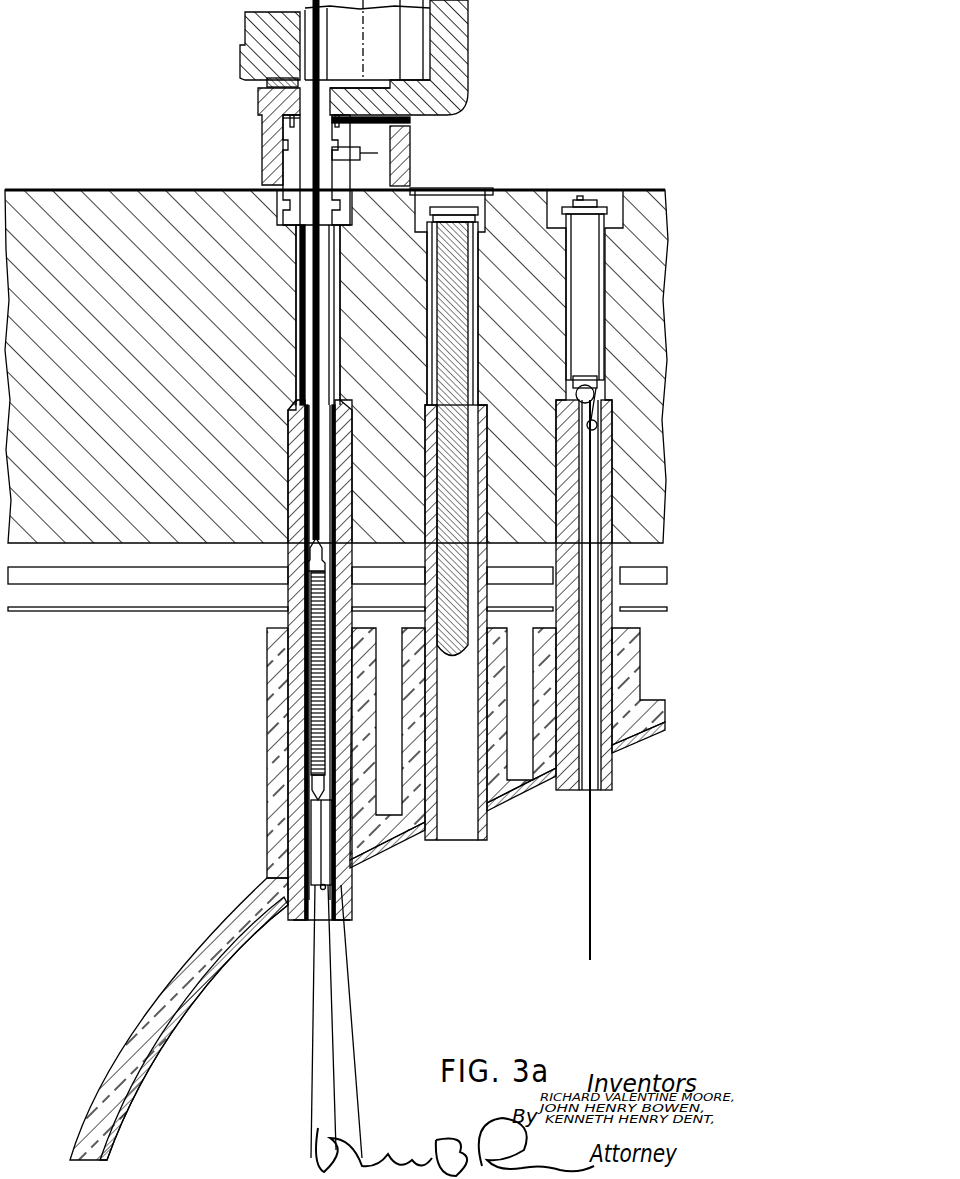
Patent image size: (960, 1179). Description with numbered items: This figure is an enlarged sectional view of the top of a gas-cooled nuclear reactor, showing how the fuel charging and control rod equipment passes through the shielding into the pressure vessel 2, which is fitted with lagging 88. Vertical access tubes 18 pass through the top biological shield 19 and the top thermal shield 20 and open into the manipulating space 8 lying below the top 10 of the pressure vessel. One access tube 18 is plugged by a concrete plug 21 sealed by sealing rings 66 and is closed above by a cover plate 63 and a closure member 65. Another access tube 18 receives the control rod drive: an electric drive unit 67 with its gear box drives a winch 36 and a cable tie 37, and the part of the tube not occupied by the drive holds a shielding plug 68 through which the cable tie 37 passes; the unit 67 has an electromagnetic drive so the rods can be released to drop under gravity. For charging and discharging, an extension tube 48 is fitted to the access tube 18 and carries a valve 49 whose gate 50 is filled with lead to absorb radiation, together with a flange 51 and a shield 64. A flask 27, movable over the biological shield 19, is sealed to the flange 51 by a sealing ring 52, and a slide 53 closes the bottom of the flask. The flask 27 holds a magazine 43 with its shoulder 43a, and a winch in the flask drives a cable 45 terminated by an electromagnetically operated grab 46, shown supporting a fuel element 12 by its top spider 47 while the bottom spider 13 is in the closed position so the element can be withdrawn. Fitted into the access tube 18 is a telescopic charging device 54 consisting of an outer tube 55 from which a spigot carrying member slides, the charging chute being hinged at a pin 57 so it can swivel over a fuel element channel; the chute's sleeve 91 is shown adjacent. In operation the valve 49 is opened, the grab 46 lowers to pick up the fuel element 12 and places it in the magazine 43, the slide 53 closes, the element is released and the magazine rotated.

The pressure vessel 2 is at (249, 942).
The manipulating space 8 is at (453, 802).
The top of the pressure vessel 10 is at (622, 740).
The fuel element 12 is at (302, 630).
The expandable spider 13 is at (312, 786).
The access tube 18 is at (340, 300).
The top biological shield 19 is at (130, 191).
The top thermal shield 20 is at (166, 582).
The concrete plug 21 is at (474, 266).
The flask 27 is at (458, 48).
The winch 36 is at (595, 393).
The cable tie 37 is at (592, 868).
The magazine 43 is at (404, 27).
The bore shoulder 43a is at (432, 110).
The cable 45 is at (312, 355).
The electromagnetically operated grab 46 is at (310, 545).
The top spider 47 is at (334, 532).
The extension tube 48 is at (283, 205).
The valve 49 is at (350, 210).
The gate 50 is at (362, 153).
The flange 51 is at (262, 160).
The sealing ring 52 is at (410, 120).
The slide 53 is at (267, 83).
The charging device 54 is at (318, 830).
The outer tube 55 is at (314, 856).
The pin 57 is at (341, 886).
The cover plate 63 is at (587, 200).
The shield 64 is at (372, 207).
The closure member 65 is at (458, 207).
The sealing ring 66 is at (430, 240).
The electric drive unit 67 is at (590, 292).
The shielding plug 68 is at (616, 626).
The lagging 88 is at (150, 990).
The sleeve 91 is at (578, 432).